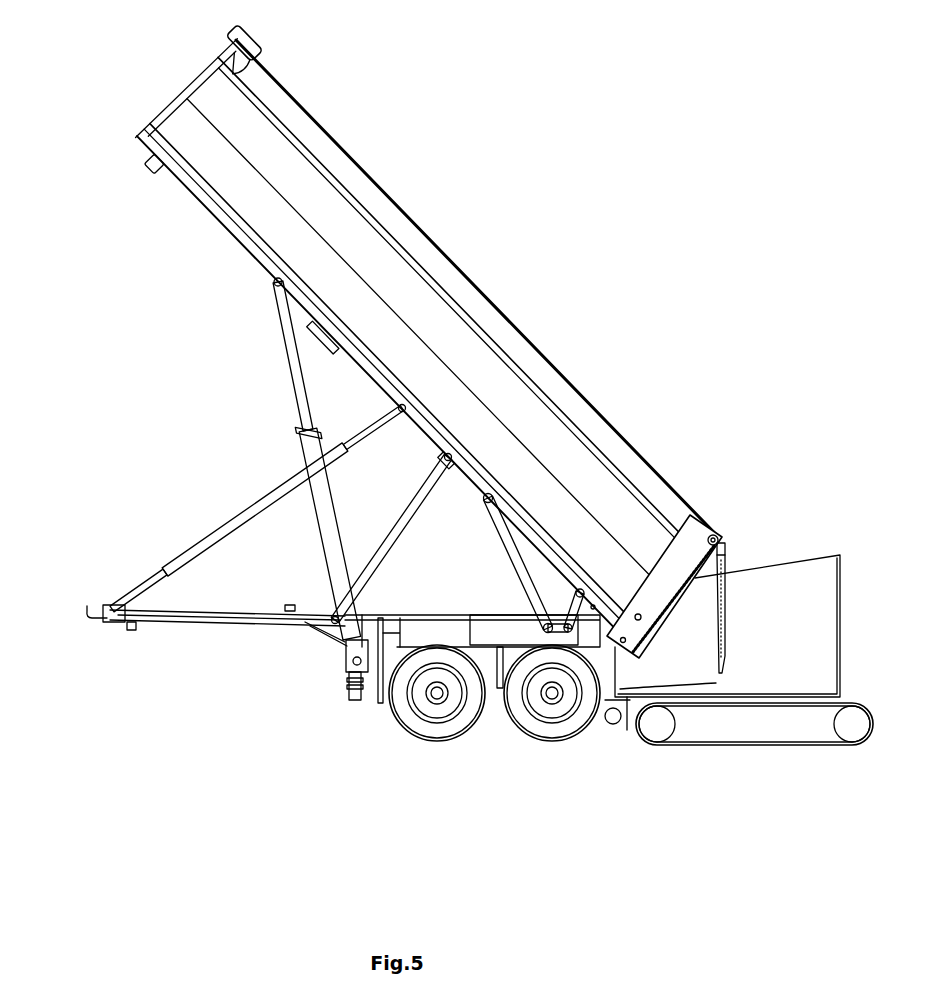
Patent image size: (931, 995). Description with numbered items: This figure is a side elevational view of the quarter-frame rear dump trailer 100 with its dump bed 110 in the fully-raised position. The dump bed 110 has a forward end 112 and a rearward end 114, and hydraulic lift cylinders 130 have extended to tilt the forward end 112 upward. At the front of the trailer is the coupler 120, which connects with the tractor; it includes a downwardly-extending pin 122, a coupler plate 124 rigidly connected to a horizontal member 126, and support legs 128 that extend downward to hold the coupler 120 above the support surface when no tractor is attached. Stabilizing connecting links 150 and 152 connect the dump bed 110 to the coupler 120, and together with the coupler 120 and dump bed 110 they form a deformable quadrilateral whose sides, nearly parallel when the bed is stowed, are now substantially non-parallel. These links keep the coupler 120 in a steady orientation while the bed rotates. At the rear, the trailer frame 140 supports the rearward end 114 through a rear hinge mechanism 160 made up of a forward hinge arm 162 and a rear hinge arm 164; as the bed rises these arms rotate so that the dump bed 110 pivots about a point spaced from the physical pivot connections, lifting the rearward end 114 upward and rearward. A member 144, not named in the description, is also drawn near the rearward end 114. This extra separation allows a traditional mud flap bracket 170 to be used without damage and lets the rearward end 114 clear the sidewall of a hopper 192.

The quarter-frame rear dump trailer 100 is at (566, 240).
The dump bed 110 is at (559, 359).
The forward end 112 is at (236, 42).
The rearward end 114 is at (700, 520).
The coupler 120 is at (118, 694).
The downwardly-extending pin 122 is at (130, 630).
The coupler plate 124 is at (90, 610).
The horizontal member 126 is at (258, 628).
The support legs 128 is at (345, 693).
The hydraulic lift cylinders 130 is at (307, 452).
The trailer frame 140 is at (482, 638).
The tailgate prop bar 144 is at (718, 683).
The stabilizing connecting link 150 is at (262, 502).
The stabilizing connecting link 152 is at (412, 500).
The rear hinge mechanism 160 is at (462, 577).
The forward hinge arm 162 is at (497, 522).
The rear hinge arm 164 is at (567, 592).
The mud flap bracket 170 is at (619, 646).
The hopper 192 is at (770, 557).